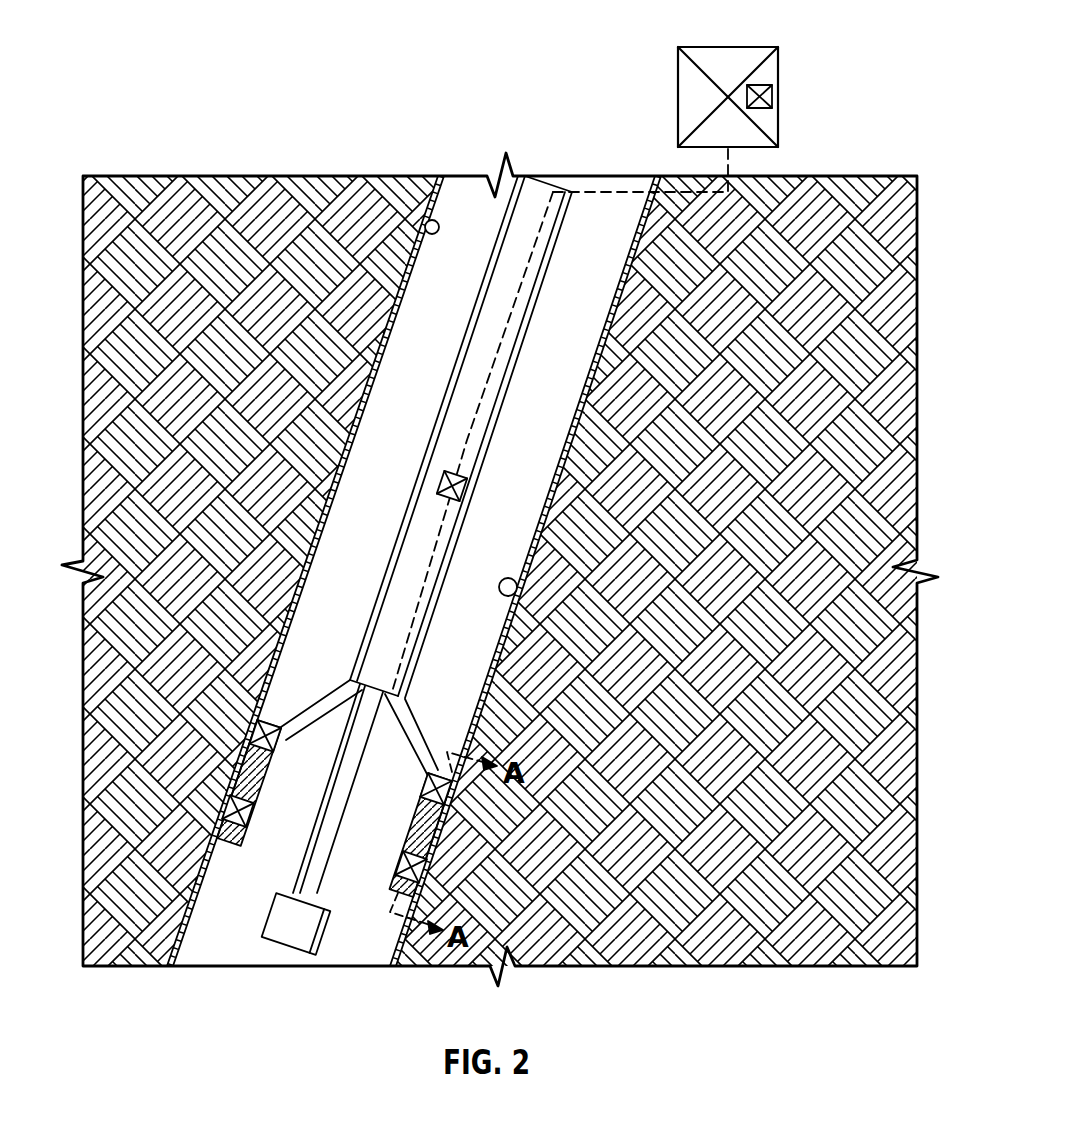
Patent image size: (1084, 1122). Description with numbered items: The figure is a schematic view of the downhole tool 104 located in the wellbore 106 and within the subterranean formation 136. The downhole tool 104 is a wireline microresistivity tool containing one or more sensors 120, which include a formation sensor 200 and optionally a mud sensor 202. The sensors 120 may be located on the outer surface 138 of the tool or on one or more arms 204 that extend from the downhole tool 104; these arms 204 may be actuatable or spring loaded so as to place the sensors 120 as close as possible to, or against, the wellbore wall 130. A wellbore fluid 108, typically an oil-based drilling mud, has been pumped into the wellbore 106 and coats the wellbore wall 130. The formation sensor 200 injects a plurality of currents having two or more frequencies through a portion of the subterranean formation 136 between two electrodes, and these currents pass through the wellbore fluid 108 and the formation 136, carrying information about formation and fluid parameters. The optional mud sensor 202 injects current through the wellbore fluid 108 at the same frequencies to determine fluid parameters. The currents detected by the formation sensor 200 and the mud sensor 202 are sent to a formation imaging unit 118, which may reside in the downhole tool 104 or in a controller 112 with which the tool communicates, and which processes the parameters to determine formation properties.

The downhole tool 104 is at (550, 359).
The wellbore 106 is at (426, 232).
The wellbore fluid 108 is at (438, 297).
The controller 112 is at (779, 62).
The formation imaging unit 118 is at (464, 491).
The sensors 120 is at (216, 770).
The wellbore wall 130 is at (517, 585).
The subterranean formation 136 is at (746, 685).
The outer surface 138 is at (383, 558).
The formation sensor 200 is at (226, 820).
The mud sensor 202 is at (260, 740).
The arms 204 is at (318, 700).